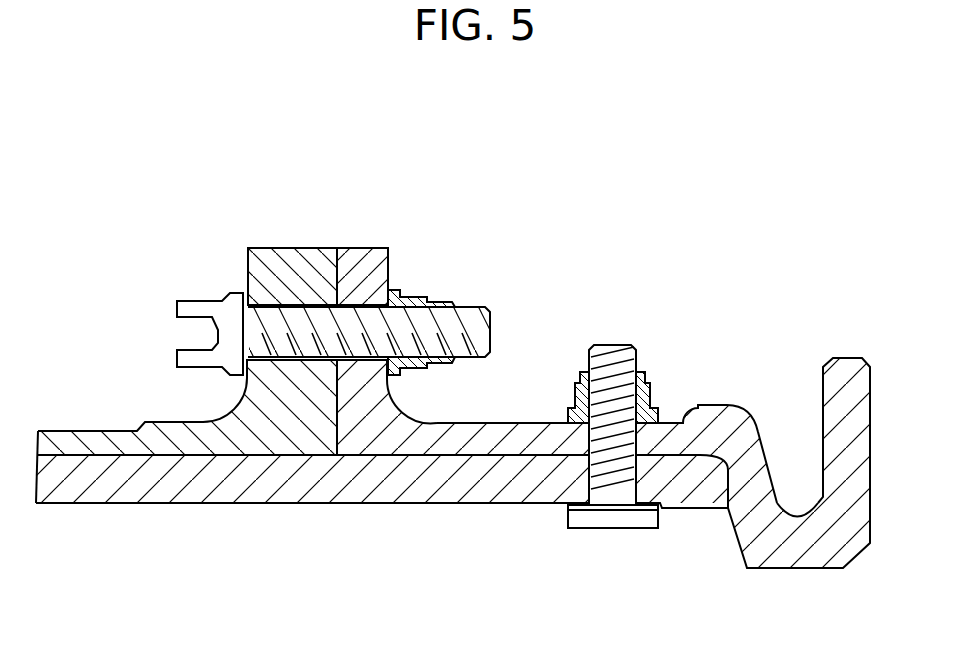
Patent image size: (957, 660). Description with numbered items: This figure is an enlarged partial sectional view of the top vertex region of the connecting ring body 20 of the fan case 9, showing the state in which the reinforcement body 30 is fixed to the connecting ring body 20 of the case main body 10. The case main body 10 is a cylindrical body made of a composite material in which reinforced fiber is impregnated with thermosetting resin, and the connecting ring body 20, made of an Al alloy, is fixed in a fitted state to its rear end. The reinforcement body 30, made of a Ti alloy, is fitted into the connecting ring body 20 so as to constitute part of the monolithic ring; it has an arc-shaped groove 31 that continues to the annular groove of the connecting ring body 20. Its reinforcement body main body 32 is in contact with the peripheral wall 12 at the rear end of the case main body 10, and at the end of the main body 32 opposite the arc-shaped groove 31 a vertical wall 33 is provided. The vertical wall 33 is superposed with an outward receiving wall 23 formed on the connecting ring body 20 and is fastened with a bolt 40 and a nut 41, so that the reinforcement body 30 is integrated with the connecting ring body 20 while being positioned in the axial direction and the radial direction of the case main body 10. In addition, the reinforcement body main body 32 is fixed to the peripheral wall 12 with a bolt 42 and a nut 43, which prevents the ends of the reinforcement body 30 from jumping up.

The fan case 9 is at (369, 258).
The case main body 10 is at (382, 505).
The peripheral wall 12 is at (483, 488).
The connecting ring body 20 is at (92, 431).
The outward receiving wall 23 is at (293, 262).
The reinforcement body 30 is at (617, 439).
The arc-shaped groove 31 is at (805, 510).
The reinforcement body main body 32 is at (527, 440).
The vertical wall 33 is at (362, 378).
The bolt 40 is at (200, 303).
The nut 41 is at (420, 302).
The bolt 42 is at (614, 518).
The nut 43 is at (650, 393).